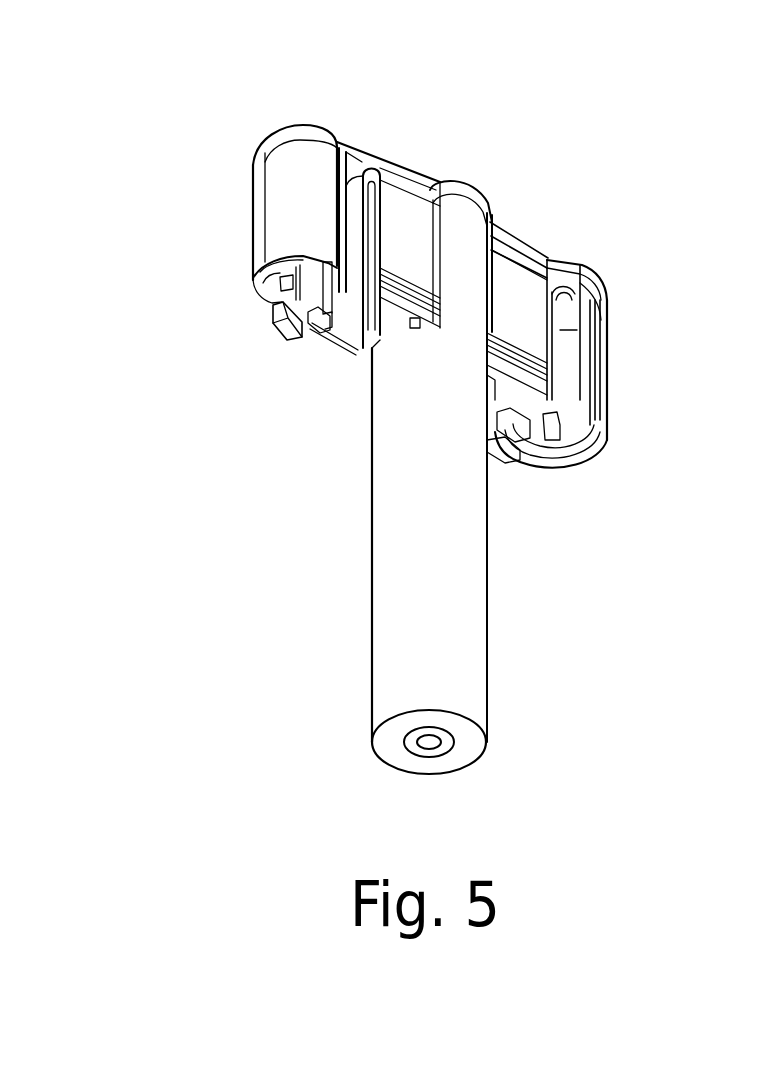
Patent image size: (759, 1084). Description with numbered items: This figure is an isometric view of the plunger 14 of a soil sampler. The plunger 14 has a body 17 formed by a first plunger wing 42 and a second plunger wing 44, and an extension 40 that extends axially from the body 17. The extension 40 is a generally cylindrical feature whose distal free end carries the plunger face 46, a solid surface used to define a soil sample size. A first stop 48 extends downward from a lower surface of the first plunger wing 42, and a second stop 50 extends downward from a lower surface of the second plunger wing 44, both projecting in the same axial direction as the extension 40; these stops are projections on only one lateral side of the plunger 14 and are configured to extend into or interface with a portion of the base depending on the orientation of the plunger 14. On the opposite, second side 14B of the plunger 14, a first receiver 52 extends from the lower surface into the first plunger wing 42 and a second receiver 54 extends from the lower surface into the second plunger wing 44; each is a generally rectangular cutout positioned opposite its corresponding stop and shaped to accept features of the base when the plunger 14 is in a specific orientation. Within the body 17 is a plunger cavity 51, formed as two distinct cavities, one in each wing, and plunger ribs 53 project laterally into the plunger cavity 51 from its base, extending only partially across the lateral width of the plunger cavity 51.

The plunger 14 is at (651, 149).
The second side 14B is at (515, 303).
The body 17 is at (609, 290).
The extension 40 is at (388, 527).
The first plunger wing 42 is at (600, 326).
The second plunger wing 44 is at (300, 163).
The plunger face 46 is at (466, 748).
The first stop 48 is at (508, 453).
The second stop 50 is at (293, 327).
The plunger cavity 51 is at (600, 447).
The first receiver 52 is at (600, 393).
The plunger ribs 53 is at (343, 313).
The second receiver 54 is at (338, 218).